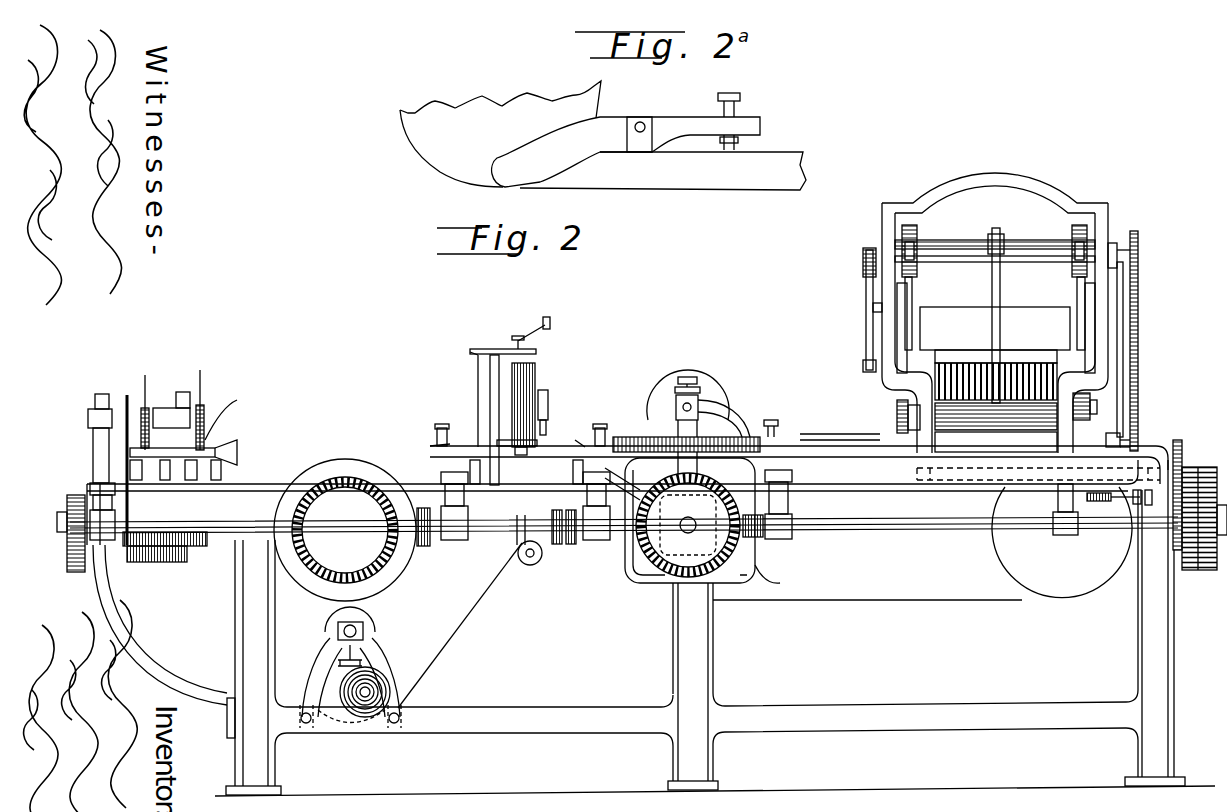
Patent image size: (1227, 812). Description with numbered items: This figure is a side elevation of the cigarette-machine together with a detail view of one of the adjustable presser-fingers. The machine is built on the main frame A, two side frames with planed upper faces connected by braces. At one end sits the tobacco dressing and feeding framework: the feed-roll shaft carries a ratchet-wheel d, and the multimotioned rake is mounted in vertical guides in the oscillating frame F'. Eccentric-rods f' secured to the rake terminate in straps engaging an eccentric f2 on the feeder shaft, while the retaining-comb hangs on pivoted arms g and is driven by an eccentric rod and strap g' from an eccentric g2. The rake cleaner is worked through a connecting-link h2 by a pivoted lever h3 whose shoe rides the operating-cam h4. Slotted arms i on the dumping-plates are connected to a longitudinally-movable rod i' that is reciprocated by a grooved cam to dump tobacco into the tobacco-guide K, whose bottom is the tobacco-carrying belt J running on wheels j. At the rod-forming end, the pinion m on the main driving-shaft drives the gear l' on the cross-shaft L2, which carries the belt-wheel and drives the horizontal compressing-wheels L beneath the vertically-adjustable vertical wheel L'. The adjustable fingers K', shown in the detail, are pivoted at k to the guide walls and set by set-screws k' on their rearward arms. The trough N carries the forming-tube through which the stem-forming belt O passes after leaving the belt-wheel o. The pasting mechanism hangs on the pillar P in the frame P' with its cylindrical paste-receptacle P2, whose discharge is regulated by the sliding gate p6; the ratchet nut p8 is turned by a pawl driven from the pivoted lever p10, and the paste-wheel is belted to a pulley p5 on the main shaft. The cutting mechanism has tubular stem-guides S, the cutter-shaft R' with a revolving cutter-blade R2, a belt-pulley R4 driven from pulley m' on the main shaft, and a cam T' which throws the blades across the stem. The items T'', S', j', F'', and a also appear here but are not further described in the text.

In FIG. 2A, the vertical wheel L' is at (500, 134).
In FIG. 2, the vertical wheel L' is at (688, 382).
In FIG. 2A, the vertically-adjustable finger K' is at (626, 133).
In FIG. 2, the vertically-adjustable finger K' is at (726, 425).
In FIG. 2A, the pivot k is at (649, 103).
In FIG. 2A, the adjusting set-screw k' is at (748, 117).
In FIG. 2A, the tobacco-guide K is at (663, 171).
In FIG. 2, the tobacco-guide K is at (840, 420).
In FIG. 2, the main frame A is at (858, 478).
In FIG. 2, the belt-wheel o is at (455, 553).
In FIG. 2, the spring housing T'' is at (265, 629).
In FIG. 2, the tubular guide S is at (73, 438).
In FIG. 2, the bar with horn S' is at (189, 442).
In FIG. 2, the cutter-shaft R' is at (126, 451).
In FIG. 2, the belt-pulley R4 is at (143, 400).
In FIG. 2, the revolving cutter-blade R2 is at (195, 408).
In FIG. 2, the cam T' is at (240, 406).
In FIG. 2, the pulley m' is at (165, 563).
In FIG. 2, the paste-receptacle P2 is at (537, 385).
In FIG. 2, the vertical pillar P is at (457, 420).
In FIG. 2, the frame P' is at (482, 420).
In FIG. 2, the pivoted lever p10 is at (478, 365).
In FIG. 2, the nut p8 is at (550, 325).
In FIG. 2, the sliding gate p6 is at (548, 408).
In FIG. 2, the pulley p5 is at (524, 554).
In FIG. 2, the trough N is at (578, 427).
In FIG. 2, the stem-forming belt O is at (440, 446).
In FIG. 2, the horizontal compressing-wheel L is at (686, 425).
In FIG. 2, the pivoted lever h3 is at (622, 491).
In FIG. 2, the cross-shaft L2 is at (670, 532).
In FIG. 2, the gear l' is at (659, 573).
In FIG. 2, the pinion m is at (796, 537).
In FIG. 2, the bracket j' is at (778, 573).
In FIG. 2, the tobacco-carrying belt J is at (1004, 558).
In FIG. 2, the belt-wheel j is at (1049, 530).
In FIG. 2, the oscillating frame F' is at (1030, 313).
In FIG. 2, the block F'' is at (1154, 289).
In FIG. 2, the longitudinally-movable rod i' is at (1155, 341).
In FIG. 2, the eccentric f2 is at (917, 245).
In FIG. 2, the eccentric-rod f' is at (993, 300).
In FIG. 2, the eccentric rod and strap g' is at (963, 328).
In FIG. 2, the eccentric g2 is at (865, 258).
In FIG. 2, the operating-cam h4 is at (1000, 245).
In FIG. 2, the connecting-link h2 is at (995, 328).
In FIG. 2, the pivoted arm g is at (908, 416).
In FIG. 2, the gear a is at (1097, 400).
In FIG. 2, the ratchet-wheel d is at (1122, 420).
In FIG. 2, the arm i is at (1163, 437).